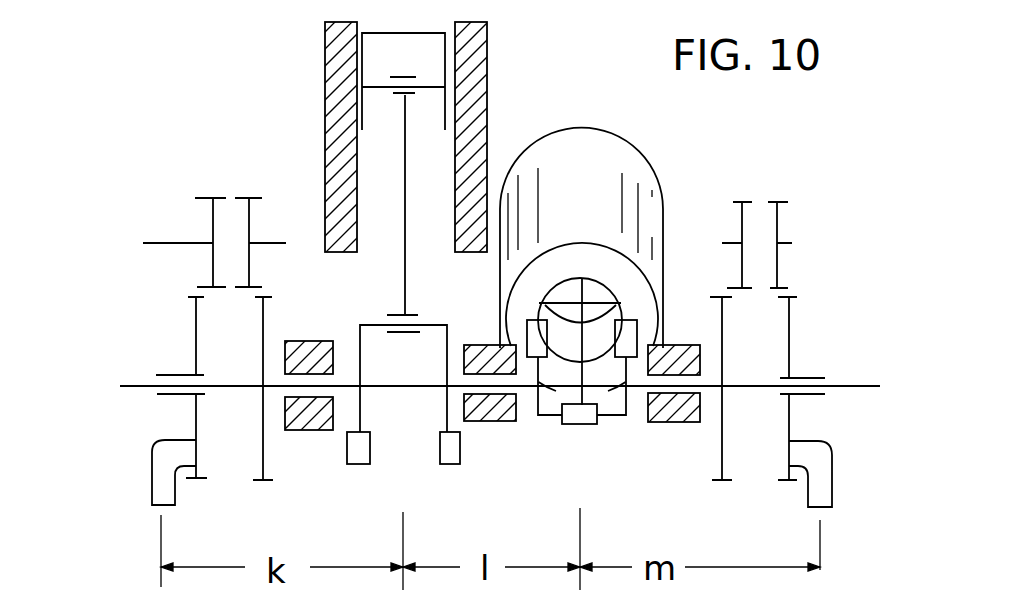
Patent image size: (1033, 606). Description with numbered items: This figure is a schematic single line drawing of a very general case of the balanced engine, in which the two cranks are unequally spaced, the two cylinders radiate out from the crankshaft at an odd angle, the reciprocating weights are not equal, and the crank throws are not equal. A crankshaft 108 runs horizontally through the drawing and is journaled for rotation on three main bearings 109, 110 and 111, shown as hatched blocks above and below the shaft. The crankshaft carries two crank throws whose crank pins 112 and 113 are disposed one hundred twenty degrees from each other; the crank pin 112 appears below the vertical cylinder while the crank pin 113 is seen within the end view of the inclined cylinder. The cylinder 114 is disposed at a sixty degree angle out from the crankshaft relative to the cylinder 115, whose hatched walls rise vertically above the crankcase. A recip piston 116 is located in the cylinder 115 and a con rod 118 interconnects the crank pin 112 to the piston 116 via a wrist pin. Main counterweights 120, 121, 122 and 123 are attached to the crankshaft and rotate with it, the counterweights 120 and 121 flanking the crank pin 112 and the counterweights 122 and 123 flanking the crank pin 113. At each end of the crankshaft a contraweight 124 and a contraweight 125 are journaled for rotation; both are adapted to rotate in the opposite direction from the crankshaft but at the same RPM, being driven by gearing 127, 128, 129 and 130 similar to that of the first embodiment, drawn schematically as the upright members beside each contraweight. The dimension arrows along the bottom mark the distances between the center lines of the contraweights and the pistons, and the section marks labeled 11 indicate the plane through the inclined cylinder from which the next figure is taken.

The crankshaft 108 is at (862, 372).
The main bearing 109 is at (311, 345).
The main bearing 110 is at (505, 404).
The main bearing 111 is at (668, 410).
The crank pin 112 is at (373, 324).
The crank pin 113 is at (612, 420).
The cylinder 114 is at (648, 212).
The cylinder 115 is at (357, 168).
The recip piston 116 is at (423, 32).
The con rod 118 is at (405, 258).
The main counterweight 120 is at (357, 462).
The main counterweight 121 is at (447, 464).
The main counterweight 122 is at (533, 340).
The main counterweight 123 is at (625, 340).
The contraweight 124 is at (163, 480).
The contraweight 125 is at (820, 488).
The gearing 127 is at (738, 496).
The gearing 128 is at (758, 182).
The gearing 129 is at (803, 222).
The gearing 130 is at (829, 288).
The section line 11- 11 is at (553, 498).